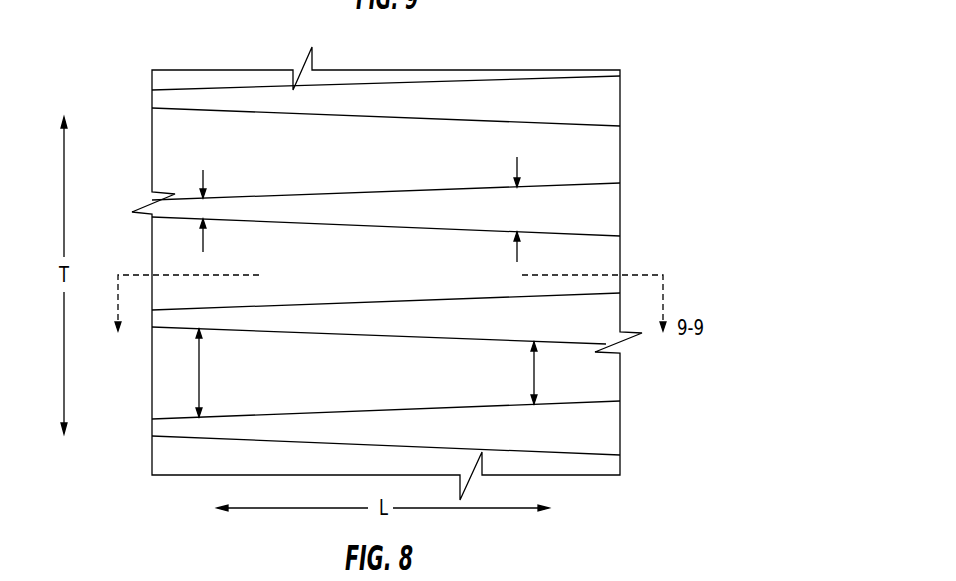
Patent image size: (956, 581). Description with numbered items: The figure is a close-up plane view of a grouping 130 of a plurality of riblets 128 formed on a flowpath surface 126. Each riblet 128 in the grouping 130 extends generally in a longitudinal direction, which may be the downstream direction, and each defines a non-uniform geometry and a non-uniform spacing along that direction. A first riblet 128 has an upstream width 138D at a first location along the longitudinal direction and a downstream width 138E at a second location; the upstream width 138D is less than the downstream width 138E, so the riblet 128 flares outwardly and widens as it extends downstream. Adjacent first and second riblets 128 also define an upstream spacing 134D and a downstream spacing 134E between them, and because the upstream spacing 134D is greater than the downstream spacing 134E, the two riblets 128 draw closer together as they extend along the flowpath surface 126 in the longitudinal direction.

The grouping 130 is at (632, 50).
The riblet 128 is at (533, 92).
The flowpath surface 126 is at (580, 163).
The upstream width 138D is at (205, 180).
The downstream width 138E is at (515, 172).
The upstream spacing 134D is at (200, 373).
The downstream spacing 134E is at (532, 369).